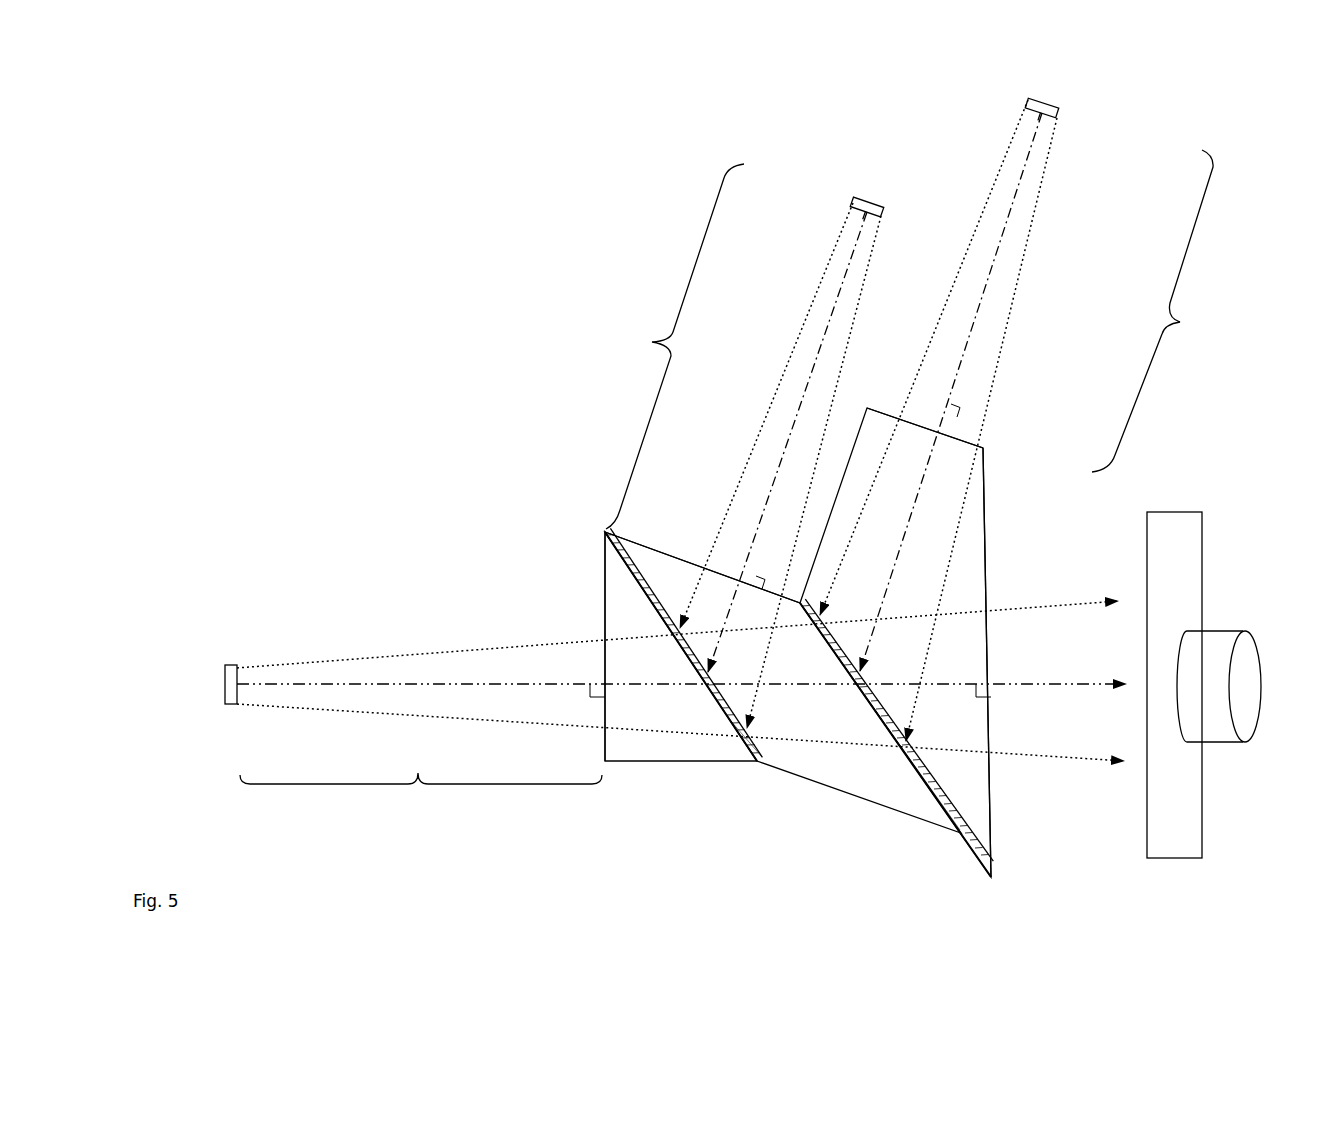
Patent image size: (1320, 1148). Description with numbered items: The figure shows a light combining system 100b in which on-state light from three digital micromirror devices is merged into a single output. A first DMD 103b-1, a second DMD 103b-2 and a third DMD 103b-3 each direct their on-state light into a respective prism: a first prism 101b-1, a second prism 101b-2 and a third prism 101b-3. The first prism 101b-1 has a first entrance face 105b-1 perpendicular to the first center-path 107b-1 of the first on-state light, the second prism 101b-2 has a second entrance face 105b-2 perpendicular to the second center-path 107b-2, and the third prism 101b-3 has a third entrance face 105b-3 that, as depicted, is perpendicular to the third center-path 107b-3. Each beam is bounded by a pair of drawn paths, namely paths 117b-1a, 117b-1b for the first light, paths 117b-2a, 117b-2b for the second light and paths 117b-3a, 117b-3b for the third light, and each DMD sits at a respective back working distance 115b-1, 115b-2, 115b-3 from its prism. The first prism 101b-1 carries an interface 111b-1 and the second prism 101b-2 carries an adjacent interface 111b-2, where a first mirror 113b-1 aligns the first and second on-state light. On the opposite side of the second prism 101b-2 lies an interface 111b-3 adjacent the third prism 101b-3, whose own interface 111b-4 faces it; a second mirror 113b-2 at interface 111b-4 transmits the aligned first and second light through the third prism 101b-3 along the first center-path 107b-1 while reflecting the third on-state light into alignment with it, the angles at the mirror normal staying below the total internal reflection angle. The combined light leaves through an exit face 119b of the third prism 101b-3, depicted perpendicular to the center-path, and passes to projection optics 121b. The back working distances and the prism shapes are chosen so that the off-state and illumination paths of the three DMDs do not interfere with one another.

The system 100b is at (278, 220).
The first prism 101b-1 is at (617, 592).
The second prism 101b-2 is at (848, 784).
The third prism 101b-3 is at (973, 542).
The first DMD 103b-1 is at (225, 672).
The second DMD 103b-2 is at (882, 208).
The third DMD 103b-3 is at (1060, 112).
The first entrance face 105b-1 is at (590, 612).
The second entrance face 105b-2 is at (642, 534).
The third entrance face 105b-3 is at (888, 398).
The first center-path 107b-1 is at (360, 687).
The second center-path 107b-2 is at (778, 467).
The third center-path 107b-3 is at (950, 412).
The interface 111b-1 is at (625, 555).
The interface 111b-2 is at (612, 533).
The interface 111b-3 is at (948, 828).
The interface 111b-4 is at (983, 865).
The first mirror 113b-1 is at (750, 760).
The second mirror 113b-2 is at (927, 795).
The back working distance 115b-1 is at (421, 795).
The back working distance 115b-2 is at (656, 346).
The back working distance 115b-3 is at (1175, 311).
The path 117b-1a is at (258, 707).
The path 117b-1b is at (377, 657).
The path 117b-2a is at (910, 243).
The path 117b-2b is at (777, 385).
The path 117b-3a is at (1013, 295).
The path 117b-3b is at (928, 338).
The exit face 119b is at (1002, 816).
The projection optics 121b is at (1197, 548).